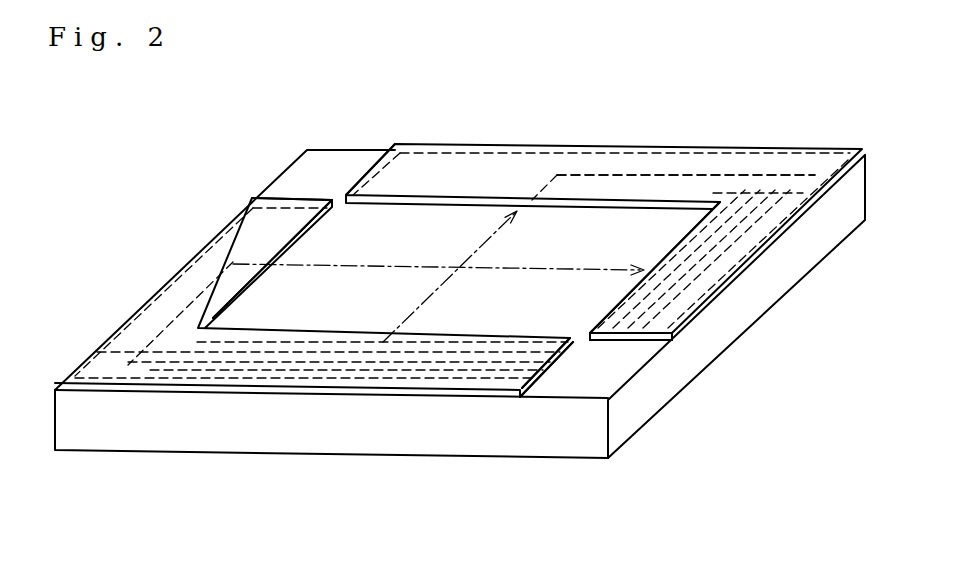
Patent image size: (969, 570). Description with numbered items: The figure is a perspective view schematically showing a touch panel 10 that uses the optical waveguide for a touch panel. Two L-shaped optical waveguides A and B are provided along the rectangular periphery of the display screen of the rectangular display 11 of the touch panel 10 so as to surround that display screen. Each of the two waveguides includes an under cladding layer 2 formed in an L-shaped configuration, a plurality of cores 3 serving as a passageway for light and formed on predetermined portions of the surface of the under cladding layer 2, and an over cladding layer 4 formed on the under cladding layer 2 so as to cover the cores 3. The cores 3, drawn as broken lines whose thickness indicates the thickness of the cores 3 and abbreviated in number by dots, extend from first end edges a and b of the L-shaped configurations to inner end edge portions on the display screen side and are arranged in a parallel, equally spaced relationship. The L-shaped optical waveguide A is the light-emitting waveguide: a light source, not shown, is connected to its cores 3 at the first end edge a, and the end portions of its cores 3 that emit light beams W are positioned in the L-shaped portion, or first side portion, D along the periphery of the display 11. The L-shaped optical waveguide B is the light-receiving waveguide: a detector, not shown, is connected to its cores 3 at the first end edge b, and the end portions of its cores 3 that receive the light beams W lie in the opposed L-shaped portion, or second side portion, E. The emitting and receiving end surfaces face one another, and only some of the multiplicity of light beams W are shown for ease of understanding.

The touch panel 10 is at (326, 129).
The display 11 is at (577, 230).
The under cladding layer 2 is at (327, 395).
The cores 3 is at (273, 390).
The over cladding layer 4 is at (675, 162).
The light beams W is at (415, 263).
The L-shaped optical waveguide (light-emitting) A is at (288, 198).
The L-shaped optical waveguide (light-receiving) B is at (372, 168).
The L-shaped portion (first side portion) D is at (300, 248).
The L-shaped portion (second side portion) E is at (686, 236).
The first end edge a is at (548, 370).
The first end edge b is at (652, 334).